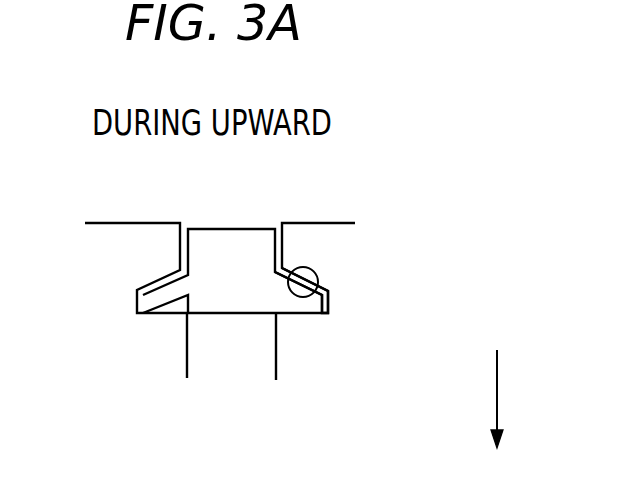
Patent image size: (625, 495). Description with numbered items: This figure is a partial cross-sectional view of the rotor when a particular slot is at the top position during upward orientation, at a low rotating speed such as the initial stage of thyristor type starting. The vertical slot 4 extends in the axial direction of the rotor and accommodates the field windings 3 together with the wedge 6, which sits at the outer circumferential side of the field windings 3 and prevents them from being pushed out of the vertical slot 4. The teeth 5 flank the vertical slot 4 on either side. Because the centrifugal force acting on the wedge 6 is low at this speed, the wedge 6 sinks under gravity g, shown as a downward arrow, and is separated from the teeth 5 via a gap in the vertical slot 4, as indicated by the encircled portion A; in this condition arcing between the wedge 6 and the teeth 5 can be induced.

The field windings 3 is at (252, 353).
The vertical slot 4 is at (332, 303).
The teeth 5 is at (328, 240).
The wedge 6 is at (252, 252).
The encircled portion A is at (317, 270).
The gravity g is at (511, 399).